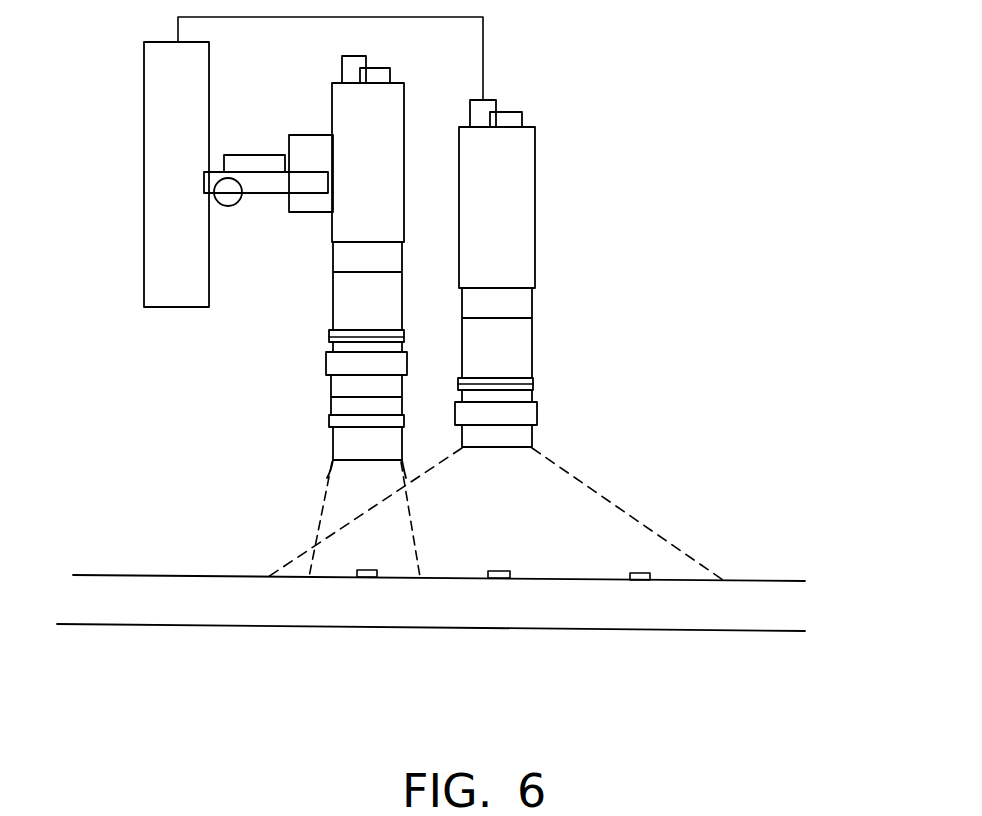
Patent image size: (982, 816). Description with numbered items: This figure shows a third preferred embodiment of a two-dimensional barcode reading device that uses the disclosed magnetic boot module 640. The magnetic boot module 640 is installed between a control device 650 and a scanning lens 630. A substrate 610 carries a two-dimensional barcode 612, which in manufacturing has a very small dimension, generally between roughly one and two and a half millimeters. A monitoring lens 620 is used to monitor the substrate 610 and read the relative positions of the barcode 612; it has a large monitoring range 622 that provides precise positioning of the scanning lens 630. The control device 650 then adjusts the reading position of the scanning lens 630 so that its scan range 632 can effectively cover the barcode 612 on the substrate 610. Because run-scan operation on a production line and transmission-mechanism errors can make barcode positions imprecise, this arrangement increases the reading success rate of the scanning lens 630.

The substrate 610 is at (790, 605).
The 2D barcode 612 is at (365, 577).
The monitoring lens 620 is at (535, 170).
The monitoring range 622 is at (626, 513).
The scanning lens 630 is at (330, 228).
The scan range 632 is at (320, 520).
The magnetic boot module 640 is at (267, 197).
The control device 650 is at (144, 175).